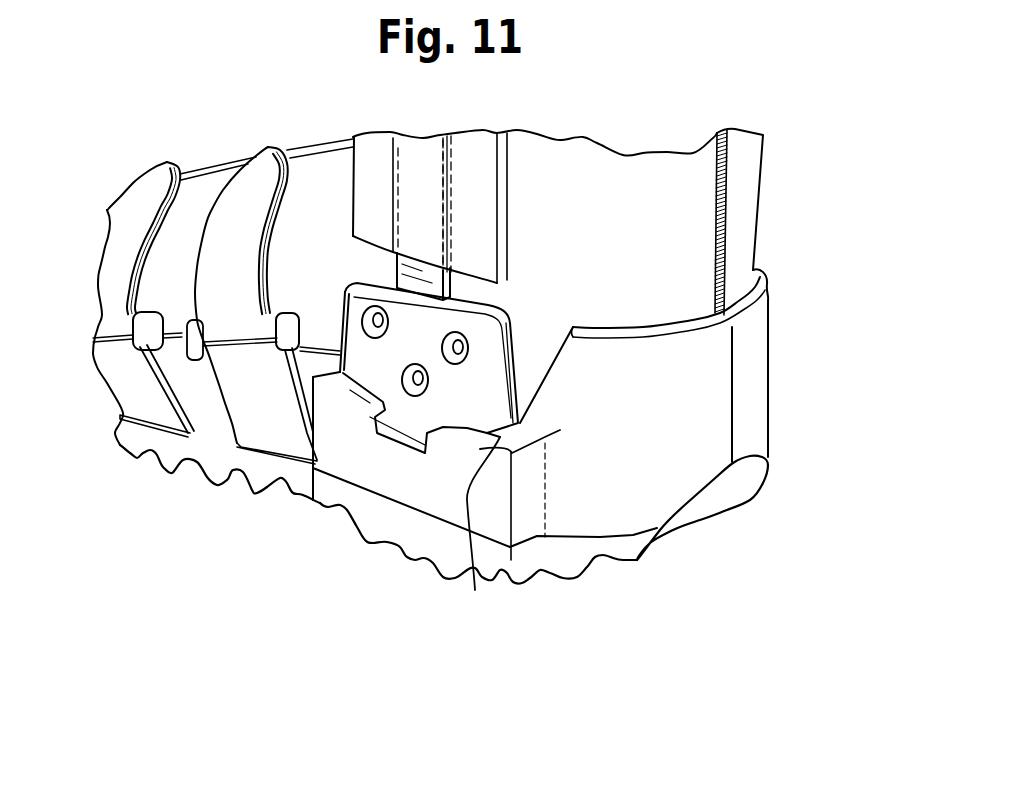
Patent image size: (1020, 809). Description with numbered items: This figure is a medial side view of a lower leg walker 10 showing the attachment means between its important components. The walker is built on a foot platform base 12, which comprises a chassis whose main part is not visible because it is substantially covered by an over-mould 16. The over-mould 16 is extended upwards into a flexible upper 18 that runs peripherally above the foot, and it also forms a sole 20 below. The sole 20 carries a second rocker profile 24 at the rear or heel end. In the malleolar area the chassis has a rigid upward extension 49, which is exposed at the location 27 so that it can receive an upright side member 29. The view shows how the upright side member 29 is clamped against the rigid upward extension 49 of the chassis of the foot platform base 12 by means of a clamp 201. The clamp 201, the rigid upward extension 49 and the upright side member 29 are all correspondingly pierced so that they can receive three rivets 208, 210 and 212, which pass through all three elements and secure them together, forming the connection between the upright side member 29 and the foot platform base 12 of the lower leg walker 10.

The lower leg walker 10 is at (809, 218).
The foot platform base 12 is at (122, 532).
The over-mould 16 is at (526, 545).
The flexible upper 18 is at (167, 313).
The sole 20 is at (252, 497).
The second rocker profile 24 is at (410, 558).
The exposed area of rigid upward extension 27 is at (475, 567).
The upright side member 29 is at (450, 198).
The rigid upward extension 49 is at (470, 302).
The clamp 201 is at (514, 333).
The rivet 208 is at (362, 318).
The rivet 210 is at (466, 360).
The rivet 212 is at (413, 398).